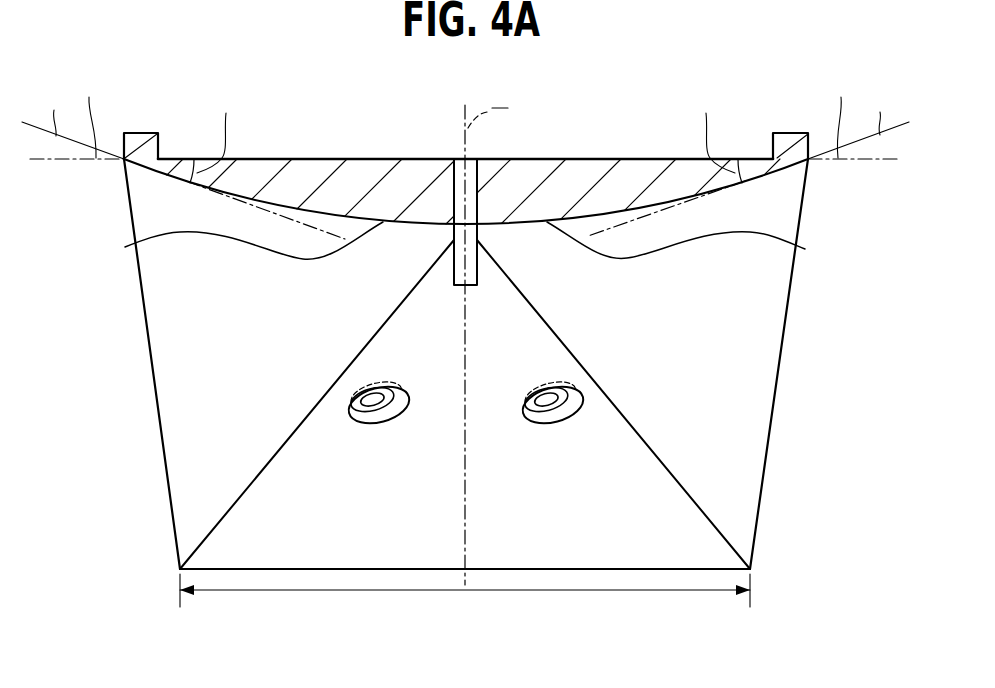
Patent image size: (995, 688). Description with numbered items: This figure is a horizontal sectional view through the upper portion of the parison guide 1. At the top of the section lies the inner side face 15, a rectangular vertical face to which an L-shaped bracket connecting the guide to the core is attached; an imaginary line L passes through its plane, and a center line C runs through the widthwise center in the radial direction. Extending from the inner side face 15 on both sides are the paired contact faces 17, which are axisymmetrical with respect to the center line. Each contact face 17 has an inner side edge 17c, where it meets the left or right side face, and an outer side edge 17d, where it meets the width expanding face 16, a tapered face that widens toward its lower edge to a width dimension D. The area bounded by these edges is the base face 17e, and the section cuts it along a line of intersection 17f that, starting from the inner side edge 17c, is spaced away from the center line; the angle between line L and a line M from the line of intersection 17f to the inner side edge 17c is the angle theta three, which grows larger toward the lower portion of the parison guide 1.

The parison guide 1 is at (608, 97).
The inner side face 15 is at (640, 158).
The width expanding face 16 is at (547, 542).
The contact face 17 is at (178, 358).
The inner side edge 17c is at (124, 160).
The outer side edge 17d is at (222, 522).
The base face 17e is at (190, 438).
The line of intersection 17f is at (125, 247).